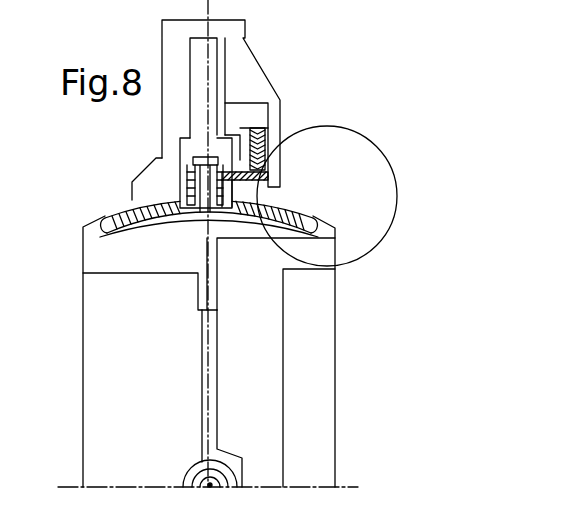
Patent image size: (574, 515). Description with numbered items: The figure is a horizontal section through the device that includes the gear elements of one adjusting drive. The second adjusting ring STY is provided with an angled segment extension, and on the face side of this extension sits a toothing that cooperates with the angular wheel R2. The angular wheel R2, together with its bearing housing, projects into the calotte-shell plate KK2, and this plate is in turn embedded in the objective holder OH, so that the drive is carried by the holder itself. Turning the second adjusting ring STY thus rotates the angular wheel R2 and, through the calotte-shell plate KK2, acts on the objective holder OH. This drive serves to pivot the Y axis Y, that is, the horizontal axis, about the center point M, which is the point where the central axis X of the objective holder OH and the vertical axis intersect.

The second adjusting ring STY is at (267, 117).
The angular wheel R2 is at (165, 172).
The calotte-shell plate KK2 is at (129, 217).
The objective holder OH is at (92, 252).
The Y axis Y is at (203, 343).
The center point M is at (187, 476).
The central axis X is at (354, 487).